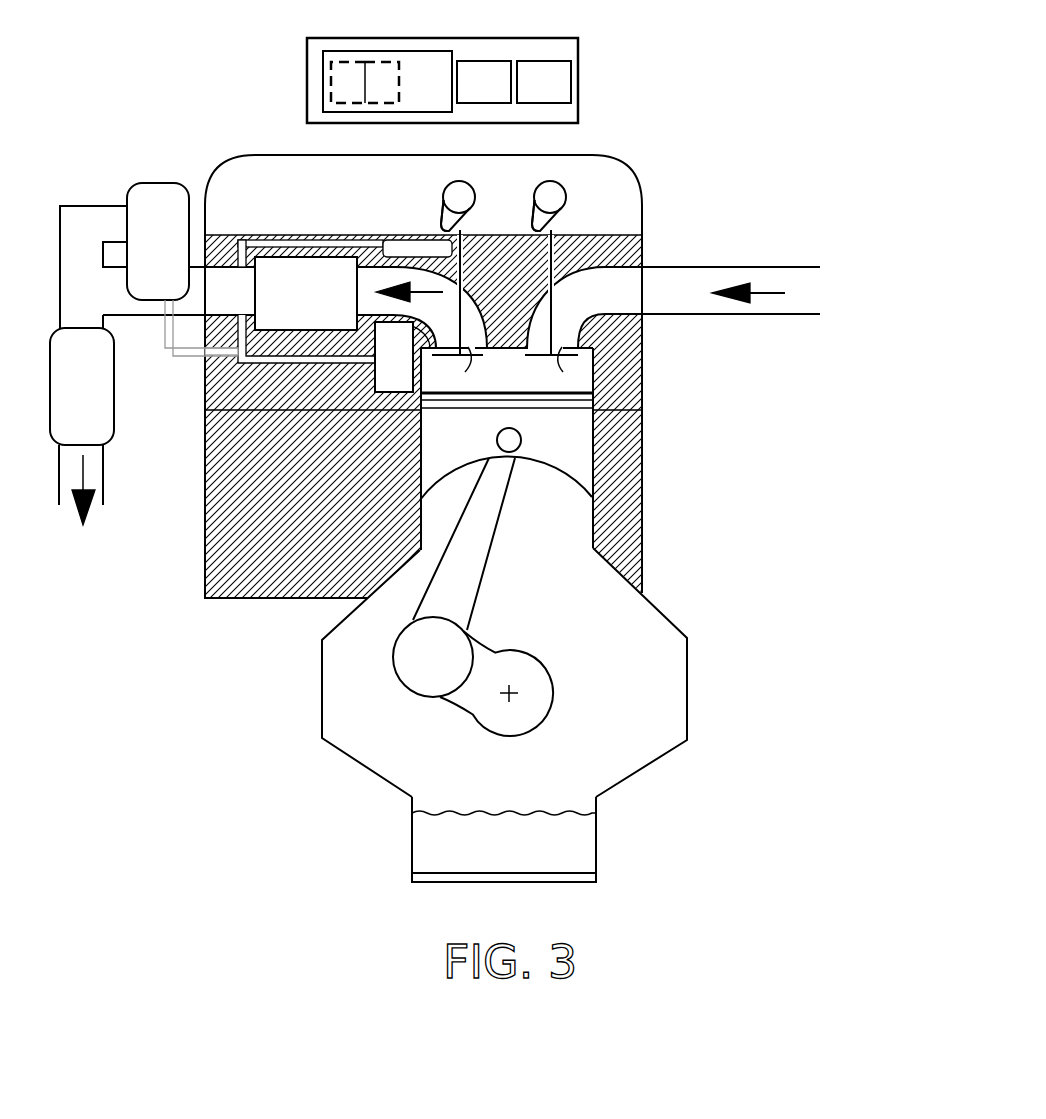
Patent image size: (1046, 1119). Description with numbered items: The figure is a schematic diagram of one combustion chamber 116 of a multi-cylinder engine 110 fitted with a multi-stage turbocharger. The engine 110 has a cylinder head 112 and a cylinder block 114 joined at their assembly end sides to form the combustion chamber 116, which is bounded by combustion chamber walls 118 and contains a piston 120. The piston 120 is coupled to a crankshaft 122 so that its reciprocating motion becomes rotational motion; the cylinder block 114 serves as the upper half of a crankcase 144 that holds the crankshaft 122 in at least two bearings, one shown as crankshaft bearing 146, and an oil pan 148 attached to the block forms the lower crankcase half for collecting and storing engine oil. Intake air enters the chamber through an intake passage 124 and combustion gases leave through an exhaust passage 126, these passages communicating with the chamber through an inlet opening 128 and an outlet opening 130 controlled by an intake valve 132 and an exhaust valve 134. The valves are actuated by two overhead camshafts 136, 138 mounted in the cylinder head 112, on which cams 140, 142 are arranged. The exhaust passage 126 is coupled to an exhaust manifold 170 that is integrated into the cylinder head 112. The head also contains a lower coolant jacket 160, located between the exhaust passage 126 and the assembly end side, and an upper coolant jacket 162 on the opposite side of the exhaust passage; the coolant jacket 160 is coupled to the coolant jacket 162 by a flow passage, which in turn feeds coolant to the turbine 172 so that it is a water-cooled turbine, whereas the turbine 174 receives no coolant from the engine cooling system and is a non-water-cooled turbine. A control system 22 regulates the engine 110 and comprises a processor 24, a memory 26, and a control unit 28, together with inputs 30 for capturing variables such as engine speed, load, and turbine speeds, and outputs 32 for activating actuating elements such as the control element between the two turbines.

The control system 22 is at (567, 38).
The processor 24 is at (544, 82).
The memory 26 is at (484, 82).
The control unit 28 is at (387, 81).
The inputs 30 is at (382, 82).
The outputs 32 is at (348, 82).
The engine 110 is at (720, 86).
The cylinder head 112 is at (205, 387).
The cylinder block 114 is at (205, 503).
The combustion chamber 116 is at (585, 374).
The combustion chamber walls 118 is at (420, 527).
The piston 120 is at (583, 449).
The crankshaft 122 is at (400, 677).
The intake passage 124 is at (778, 265).
The exhaust passage 126 is at (373, 263).
The inlet opening 128 is at (559, 314).
The outlet opening 130 is at (474, 314).
The intake valve 132 is at (551, 258).
The exhaust valve 134 is at (468, 238).
The camshaft 136 is at (562, 183).
The camshaft 138 is at (455, 182).
The cam 140 is at (530, 210).
The cam 142 is at (445, 208).
The crankcase 144 is at (510, 805).
The crankshaft bearing 146 is at (507, 693).
The oil pan 148 is at (412, 843).
The lower coolant jacket 160 is at (375, 378).
The upper coolant jacket 162 is at (397, 245).
The exhaust manifold 170 is at (323, 307).
The turbine 172 is at (176, 256).
The turbine 174 is at (101, 399).